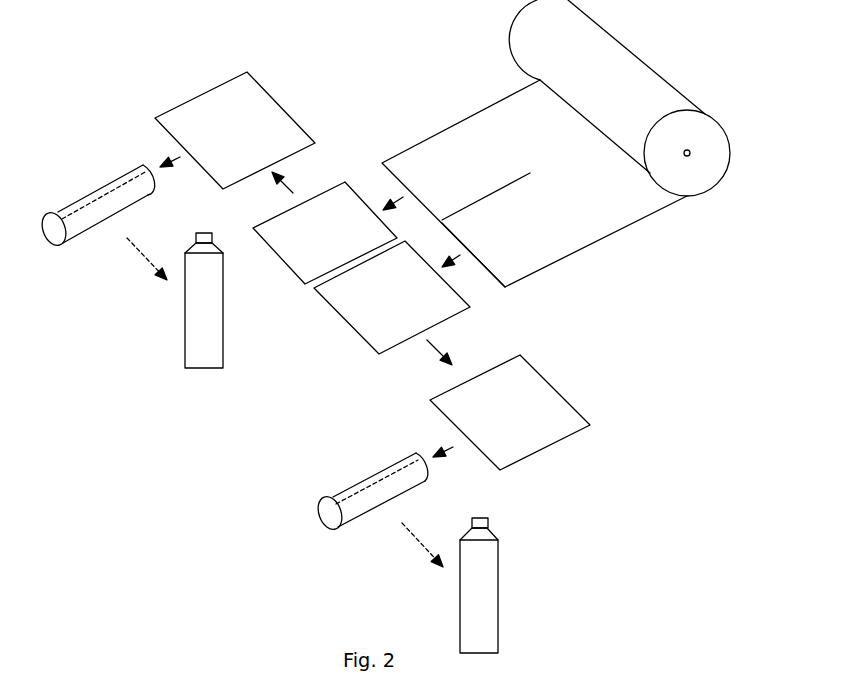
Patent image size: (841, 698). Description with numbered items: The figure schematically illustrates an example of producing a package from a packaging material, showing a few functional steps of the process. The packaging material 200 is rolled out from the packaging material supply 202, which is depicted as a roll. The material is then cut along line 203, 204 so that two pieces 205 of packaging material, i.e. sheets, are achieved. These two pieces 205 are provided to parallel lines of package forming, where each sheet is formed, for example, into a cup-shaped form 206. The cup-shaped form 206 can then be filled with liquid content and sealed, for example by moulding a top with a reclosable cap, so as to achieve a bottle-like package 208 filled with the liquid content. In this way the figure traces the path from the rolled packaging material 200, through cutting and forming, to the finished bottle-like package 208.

The packaging material 200 is at (640, 207).
The packaging material supply 202 is at (627, 63).
The cutting line 203 is at (500, 190).
The cutting line 204 is at (485, 265).
The pieces of packaging material 205 is at (332, 332).
The cup-shaped form 206 is at (383, 498).
The bottle-like package 208 is at (487, 550).